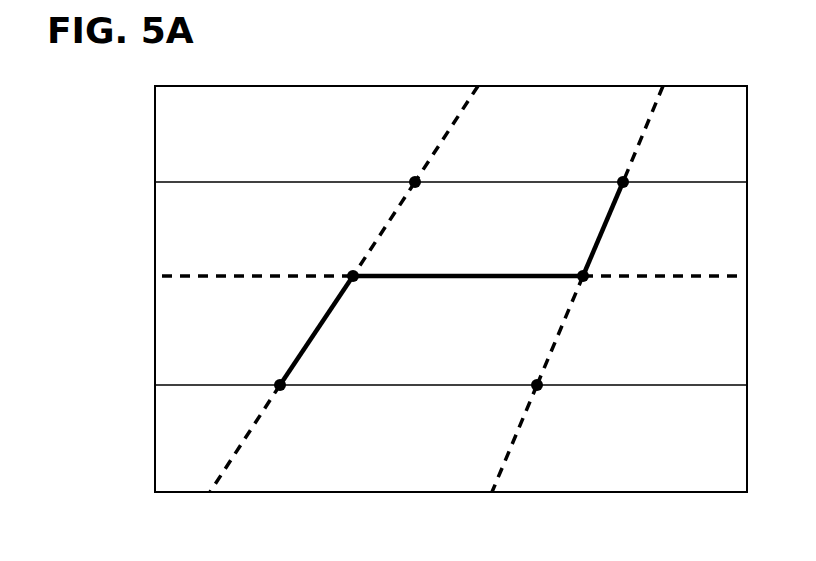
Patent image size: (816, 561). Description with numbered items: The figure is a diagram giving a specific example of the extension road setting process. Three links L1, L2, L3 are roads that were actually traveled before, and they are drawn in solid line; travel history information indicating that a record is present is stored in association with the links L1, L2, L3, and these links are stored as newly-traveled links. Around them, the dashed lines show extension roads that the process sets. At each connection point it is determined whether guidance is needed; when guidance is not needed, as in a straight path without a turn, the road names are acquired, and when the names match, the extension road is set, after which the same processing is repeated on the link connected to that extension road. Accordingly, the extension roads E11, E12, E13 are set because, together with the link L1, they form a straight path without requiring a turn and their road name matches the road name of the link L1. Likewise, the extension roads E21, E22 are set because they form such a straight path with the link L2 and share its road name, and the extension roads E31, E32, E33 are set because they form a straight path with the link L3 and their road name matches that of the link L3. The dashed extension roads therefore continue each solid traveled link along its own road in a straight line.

The extension road E11 is at (255, 440).
The extension road E12 is at (398, 220).
The extension road E13 is at (464, 120).
The extension road E21 is at (248, 268).
The extension road E22 is at (666, 286).
The extension road E31 is at (570, 327).
The extension road E32 is at (525, 433).
The extension road E33 is at (657, 124).
The link L1 is at (330, 327).
The link L2 is at (446, 288).
The link L3 is at (613, 226).